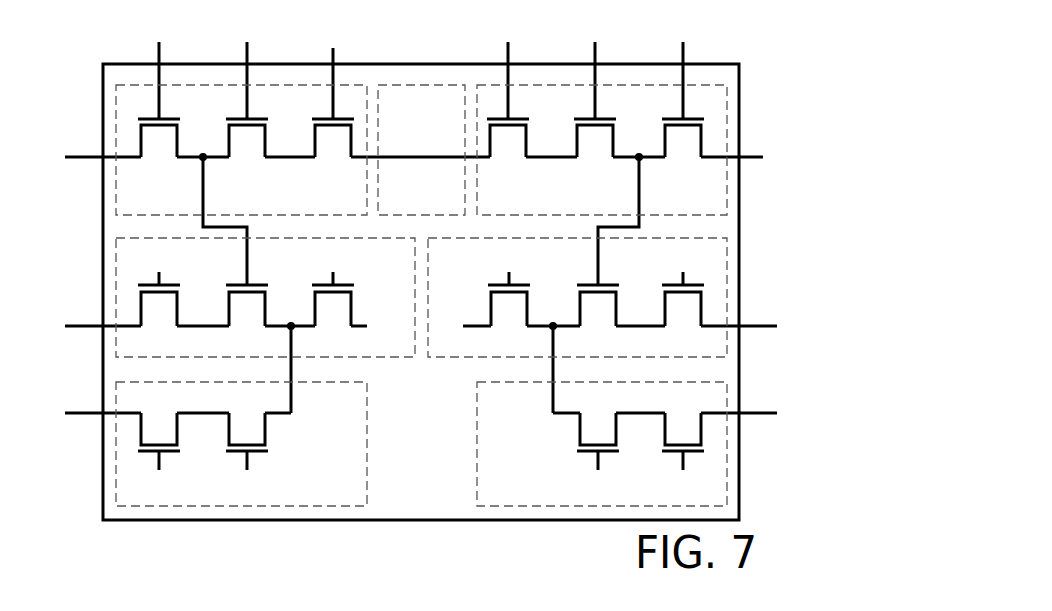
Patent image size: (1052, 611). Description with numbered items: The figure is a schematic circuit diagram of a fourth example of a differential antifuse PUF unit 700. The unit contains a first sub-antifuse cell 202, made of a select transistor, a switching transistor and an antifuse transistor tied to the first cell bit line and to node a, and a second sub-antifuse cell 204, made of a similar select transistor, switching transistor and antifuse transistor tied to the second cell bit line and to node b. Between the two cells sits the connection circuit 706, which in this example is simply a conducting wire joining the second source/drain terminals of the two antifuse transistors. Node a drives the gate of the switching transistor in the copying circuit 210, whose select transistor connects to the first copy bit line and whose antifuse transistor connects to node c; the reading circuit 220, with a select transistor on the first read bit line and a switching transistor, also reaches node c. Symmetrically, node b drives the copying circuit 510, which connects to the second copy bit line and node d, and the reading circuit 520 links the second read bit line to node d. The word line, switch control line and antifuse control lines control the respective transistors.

The antifuse PUF unit 700 is at (446, 503).
The first sub-antifuse cell 202 is at (322, 209).
The second sub-antifuse cell 204 is at (582, 209).
The connection circuit 706 is at (442, 209).
The copying circuit 210 is at (410, 354).
The copying circuit 510 is at (475, 354).
The reading circuit 220 is at (363, 479).
The reading circuit 520 is at (525, 479).